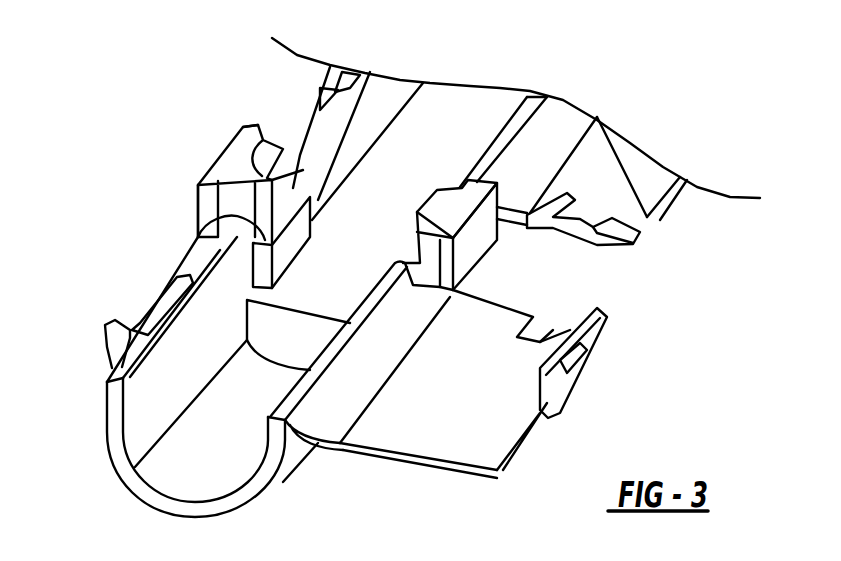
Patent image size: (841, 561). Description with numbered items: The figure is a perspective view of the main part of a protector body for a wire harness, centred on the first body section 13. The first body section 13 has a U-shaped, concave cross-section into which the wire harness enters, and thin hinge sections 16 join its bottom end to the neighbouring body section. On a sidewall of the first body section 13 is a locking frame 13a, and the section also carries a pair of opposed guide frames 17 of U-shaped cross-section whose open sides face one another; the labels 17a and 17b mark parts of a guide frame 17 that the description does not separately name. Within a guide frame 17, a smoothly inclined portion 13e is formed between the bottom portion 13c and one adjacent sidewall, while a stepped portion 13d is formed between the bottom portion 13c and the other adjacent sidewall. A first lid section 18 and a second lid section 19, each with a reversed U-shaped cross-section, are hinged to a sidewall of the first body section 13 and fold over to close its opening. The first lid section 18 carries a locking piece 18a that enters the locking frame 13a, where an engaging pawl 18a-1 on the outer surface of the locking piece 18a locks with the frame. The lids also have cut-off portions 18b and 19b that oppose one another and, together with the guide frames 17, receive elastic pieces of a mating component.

The first body section 13 is at (472, 107).
The locking frame 13a is at (107, 326).
The bottom portion 13c is at (197, 237).
The stepped portion 13d is at (200, 260).
The smoothly inclined portion 13e is at (293, 175).
The thin hinge sections 16 is at (572, 117).
The guide frames 17 is at (215, 156).
The clip hook 17a is at (245, 137).
The clip body 17b is at (197, 203).
The first lid section 18 is at (477, 447).
The locking piece 18a is at (570, 382).
The engaging pawl 18a-1 is at (580, 357).
The cut-off portion 18b is at (553, 328).
The second lid section 19 is at (632, 163).
The cut-off portion 19b is at (580, 220).